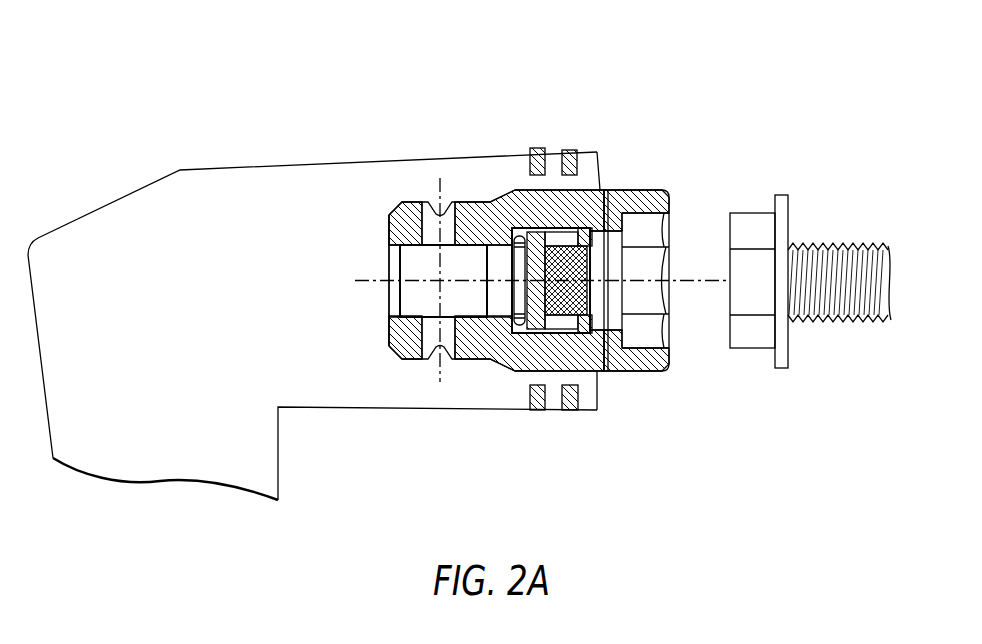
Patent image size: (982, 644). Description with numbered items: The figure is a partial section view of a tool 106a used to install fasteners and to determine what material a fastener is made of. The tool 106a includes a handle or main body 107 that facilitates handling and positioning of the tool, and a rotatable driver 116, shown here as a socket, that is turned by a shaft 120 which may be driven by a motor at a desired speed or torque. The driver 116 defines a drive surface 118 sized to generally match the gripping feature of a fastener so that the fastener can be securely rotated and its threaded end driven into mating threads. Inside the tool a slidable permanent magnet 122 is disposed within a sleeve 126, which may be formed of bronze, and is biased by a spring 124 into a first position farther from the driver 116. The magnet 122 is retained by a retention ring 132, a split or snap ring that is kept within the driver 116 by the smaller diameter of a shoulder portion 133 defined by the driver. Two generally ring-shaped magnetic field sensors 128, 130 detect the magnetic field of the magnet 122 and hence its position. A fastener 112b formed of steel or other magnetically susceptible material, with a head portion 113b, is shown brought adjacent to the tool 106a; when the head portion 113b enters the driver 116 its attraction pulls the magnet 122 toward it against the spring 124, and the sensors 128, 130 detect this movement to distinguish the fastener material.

The tool 106a is at (162, 121).
The handle or main body 107 is at (267, 210).
The spring 124 is at (492, 206).
The slidable magnet 122 is at (535, 223).
The rotatable driver 116 is at (581, 190).
The retention ring 132 is at (593, 240).
The drive surface 118 is at (670, 231).
The fastener 112b is at (804, 279).
The head portion 113b is at (752, 336).
The shaft 120 is at (388, 312).
The sleeve 126 is at (517, 372).
The magnetic field sensor 130 is at (537, 411).
The magnetic field sensor 128 is at (568, 411).
The shoulder portion 133 is at (591, 331).